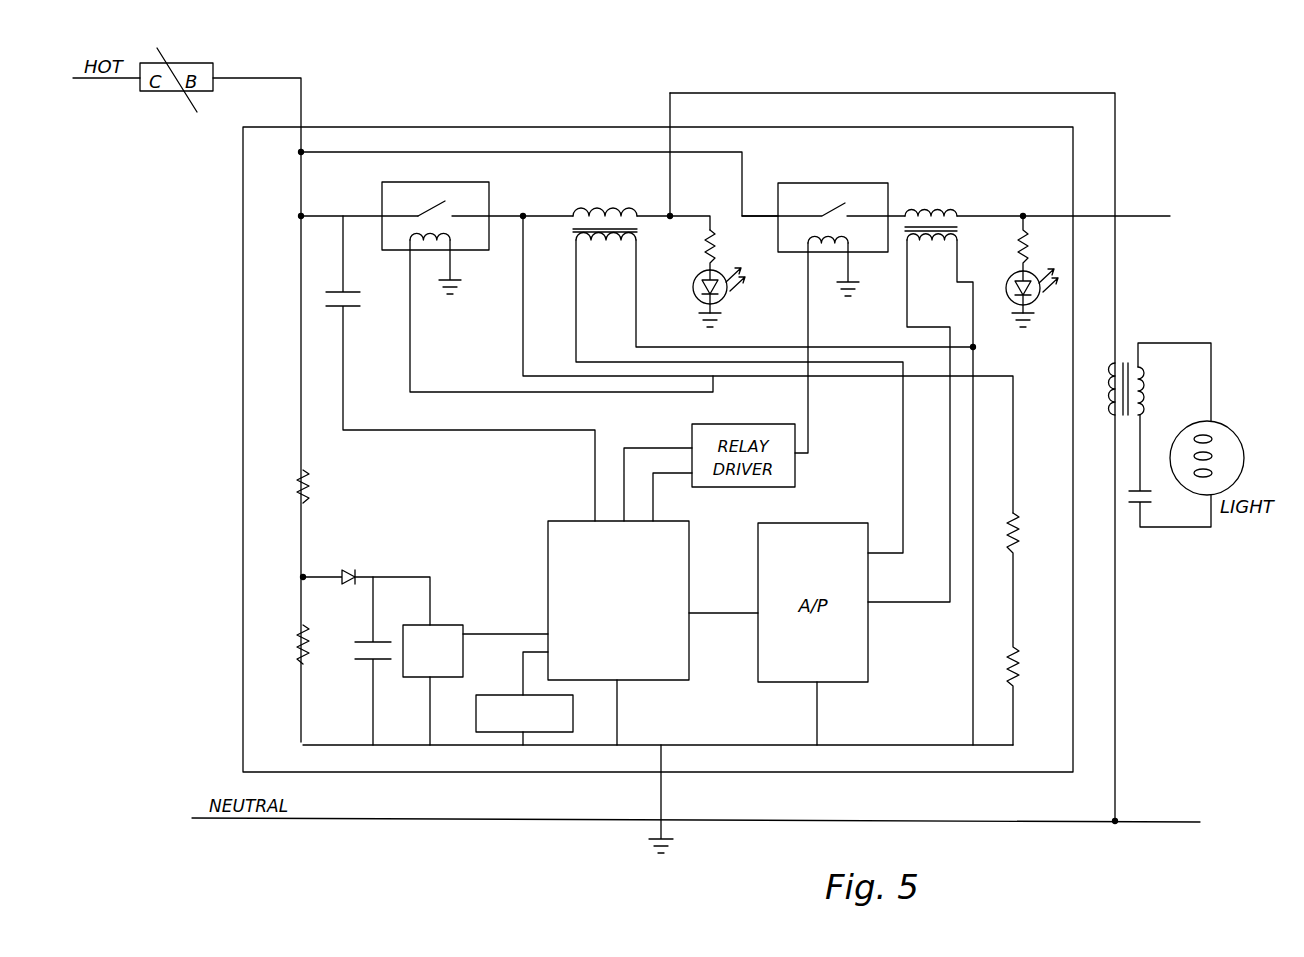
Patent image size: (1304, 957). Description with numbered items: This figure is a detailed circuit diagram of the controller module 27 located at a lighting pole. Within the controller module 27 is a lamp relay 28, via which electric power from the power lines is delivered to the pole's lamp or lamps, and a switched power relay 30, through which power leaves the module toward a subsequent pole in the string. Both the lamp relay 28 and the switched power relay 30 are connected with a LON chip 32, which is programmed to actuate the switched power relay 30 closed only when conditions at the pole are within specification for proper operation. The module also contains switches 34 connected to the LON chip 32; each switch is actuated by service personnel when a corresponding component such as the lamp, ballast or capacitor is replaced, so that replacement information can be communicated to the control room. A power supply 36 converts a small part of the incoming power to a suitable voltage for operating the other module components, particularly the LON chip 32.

The controller module 27 is at (1078, 253).
The lamp relay 28 is at (491, 196).
The switched power relay 30 is at (888, 190).
The LON chip 32 is at (691, 537).
The switches 34 is at (506, 655).
The power supply 36 is at (446, 594).